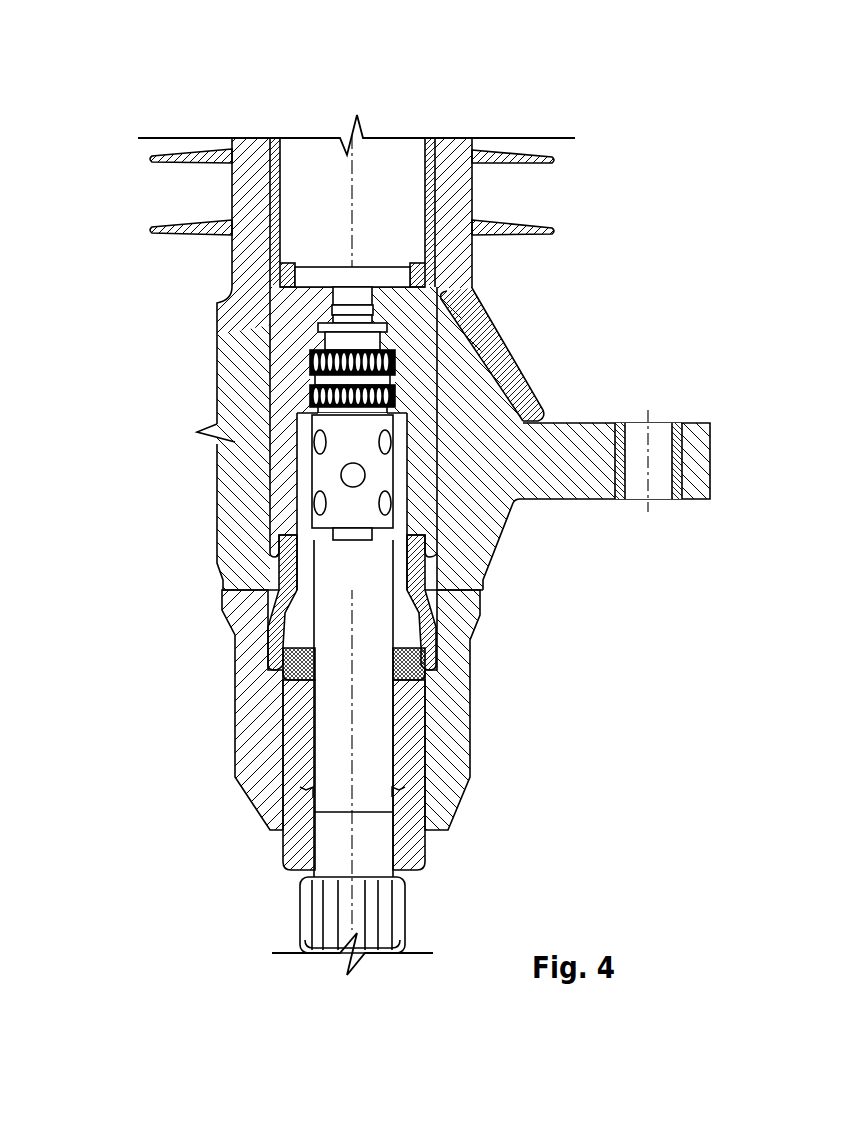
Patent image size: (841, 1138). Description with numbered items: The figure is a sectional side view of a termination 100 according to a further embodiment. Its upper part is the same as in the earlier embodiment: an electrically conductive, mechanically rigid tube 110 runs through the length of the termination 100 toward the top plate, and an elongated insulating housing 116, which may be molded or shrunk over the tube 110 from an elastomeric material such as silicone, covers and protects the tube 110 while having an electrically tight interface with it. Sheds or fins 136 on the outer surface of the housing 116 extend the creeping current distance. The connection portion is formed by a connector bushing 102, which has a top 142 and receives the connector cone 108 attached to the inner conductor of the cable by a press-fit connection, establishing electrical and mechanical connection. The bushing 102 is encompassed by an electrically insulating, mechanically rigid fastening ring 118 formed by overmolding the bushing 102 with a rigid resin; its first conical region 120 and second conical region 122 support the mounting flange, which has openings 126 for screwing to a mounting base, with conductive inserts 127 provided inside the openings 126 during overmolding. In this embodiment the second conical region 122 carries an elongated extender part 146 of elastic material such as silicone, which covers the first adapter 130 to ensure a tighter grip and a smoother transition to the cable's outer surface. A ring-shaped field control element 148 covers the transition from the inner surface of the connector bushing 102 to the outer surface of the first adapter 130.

The termination 100 is at (135, 45).
The connector bushing 102 is at (290, 373).
The connector cone 108 is at (330, 473).
The electrically conductive mechanically rigid tube 110 is at (432, 138).
The insulating housing 116 is at (457, 138).
The fastening ring 118 is at (497, 415).
The first conical region 120 is at (453, 338).
The second conical region 122 is at (480, 548).
The openings 126 is at (638, 487).
The inserts 127 is at (677, 500).
The first adapter 130 is at (408, 768).
The sheds or fins 136 is at (533, 152).
The top of the connector bushing 142 is at (340, 287).
The extender part 146 is at (457, 685).
The ring-shaped field control element 148 is at (277, 630).